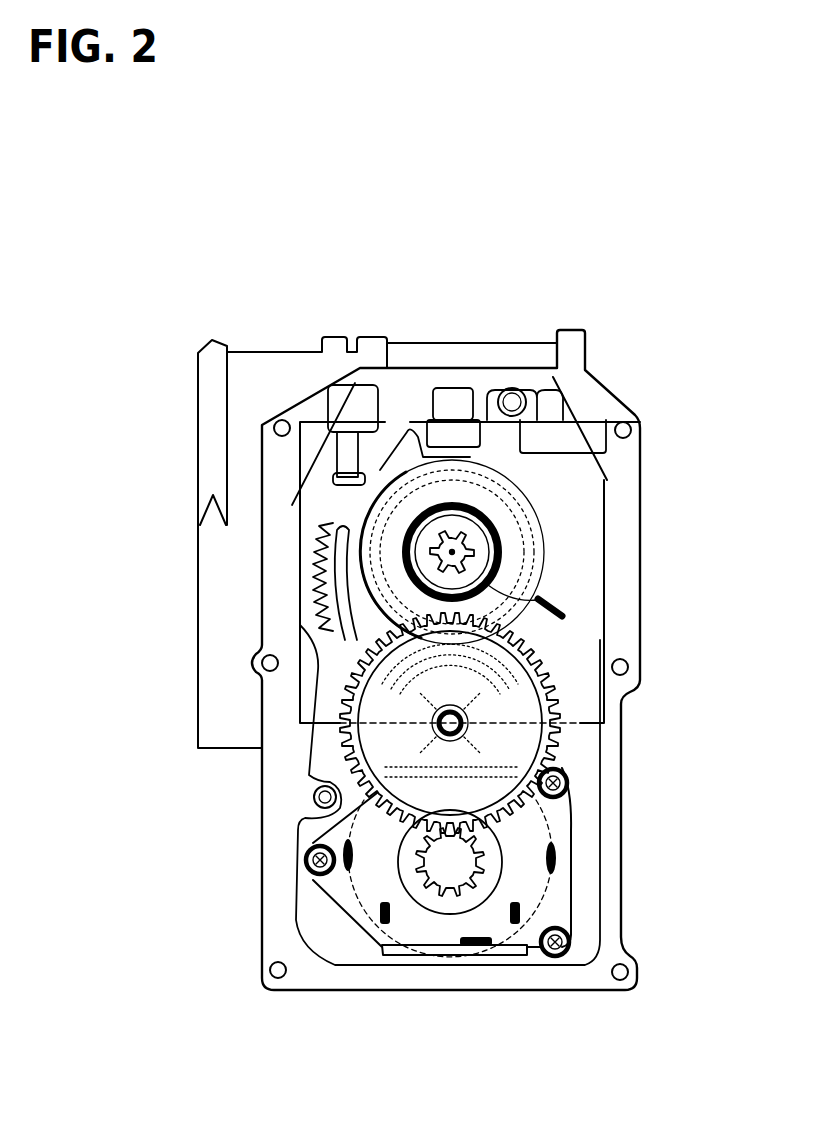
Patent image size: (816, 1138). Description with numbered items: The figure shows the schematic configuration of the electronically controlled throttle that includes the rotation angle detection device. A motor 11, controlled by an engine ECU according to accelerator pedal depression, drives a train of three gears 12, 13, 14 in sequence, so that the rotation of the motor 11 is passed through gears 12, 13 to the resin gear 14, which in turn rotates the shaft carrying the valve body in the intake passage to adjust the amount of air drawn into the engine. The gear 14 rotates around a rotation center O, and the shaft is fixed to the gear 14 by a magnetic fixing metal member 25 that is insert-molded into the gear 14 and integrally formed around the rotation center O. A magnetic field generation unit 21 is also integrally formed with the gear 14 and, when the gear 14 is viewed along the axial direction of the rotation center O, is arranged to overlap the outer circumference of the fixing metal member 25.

The motor 11 is at (555, 828).
The gear 12 is at (443, 893).
The gear 13 is at (550, 683).
The gear 14 is at (517, 545).
The magnetic field generation unit 21 is at (558, 598).
The fixing metal member 25 is at (487, 517).
The rotation center O is at (455, 552).